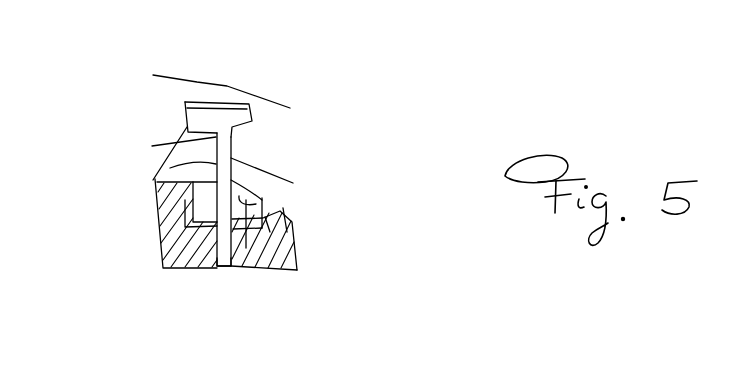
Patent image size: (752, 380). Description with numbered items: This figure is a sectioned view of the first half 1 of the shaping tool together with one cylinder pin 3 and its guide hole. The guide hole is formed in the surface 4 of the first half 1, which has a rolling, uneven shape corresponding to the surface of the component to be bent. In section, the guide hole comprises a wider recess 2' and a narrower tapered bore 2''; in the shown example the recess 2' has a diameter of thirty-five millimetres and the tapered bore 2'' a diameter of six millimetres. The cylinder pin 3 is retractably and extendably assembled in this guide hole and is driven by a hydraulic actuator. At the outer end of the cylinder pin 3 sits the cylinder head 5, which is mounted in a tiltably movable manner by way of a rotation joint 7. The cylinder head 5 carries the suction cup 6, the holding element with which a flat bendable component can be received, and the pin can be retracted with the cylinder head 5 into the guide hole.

The first half of the shaping tool 1 is at (296, 246).
The recess 2' is at (275, 199).
The tapered bore 2'' is at (250, 282).
The cylinder pin 3 is at (183, 163).
The surface 4 is at (281, 216).
The cylinder head 5 is at (246, 125).
The suction cup 6 is at (225, 82).
The rotation joint 7 is at (217, 151).